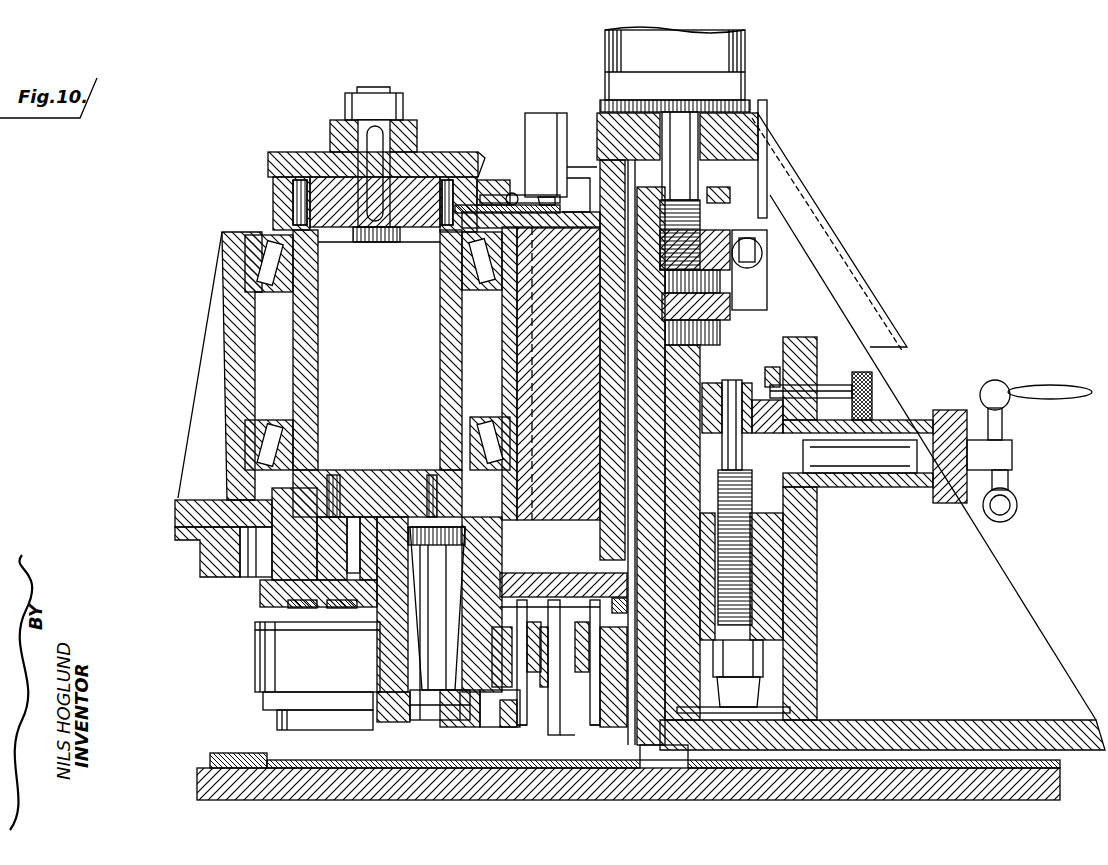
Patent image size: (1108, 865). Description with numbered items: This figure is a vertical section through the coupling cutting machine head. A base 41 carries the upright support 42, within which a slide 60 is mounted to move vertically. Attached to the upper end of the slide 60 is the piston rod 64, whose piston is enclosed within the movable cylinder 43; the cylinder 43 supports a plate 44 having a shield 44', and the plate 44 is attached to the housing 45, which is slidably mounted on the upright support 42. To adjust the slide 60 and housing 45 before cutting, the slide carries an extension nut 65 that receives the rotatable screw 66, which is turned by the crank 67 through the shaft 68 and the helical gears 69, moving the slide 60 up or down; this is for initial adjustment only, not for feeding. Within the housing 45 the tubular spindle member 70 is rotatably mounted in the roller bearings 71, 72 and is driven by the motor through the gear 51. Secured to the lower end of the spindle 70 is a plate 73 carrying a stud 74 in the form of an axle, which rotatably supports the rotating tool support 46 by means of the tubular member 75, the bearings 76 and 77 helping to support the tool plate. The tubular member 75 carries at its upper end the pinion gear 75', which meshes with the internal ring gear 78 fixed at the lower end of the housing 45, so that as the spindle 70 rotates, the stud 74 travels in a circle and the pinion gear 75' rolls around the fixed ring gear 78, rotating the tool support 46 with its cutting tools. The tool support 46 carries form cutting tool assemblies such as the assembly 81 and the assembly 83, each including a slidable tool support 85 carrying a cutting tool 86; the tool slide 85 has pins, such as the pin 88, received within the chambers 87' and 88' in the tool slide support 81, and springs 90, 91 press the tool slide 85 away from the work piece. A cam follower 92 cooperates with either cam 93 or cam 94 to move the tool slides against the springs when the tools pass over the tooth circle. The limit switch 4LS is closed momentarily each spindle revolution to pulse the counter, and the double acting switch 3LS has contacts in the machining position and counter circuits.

The base 41 is at (197, 782).
The upright support 42 is at (662, 740).
The movable cylinder 43 is at (755, 37).
The plate 44 is at (706, 153).
The shield 44' is at (829, 232).
The limit switch 4LS is at (542, 112).
The double acting switch 3LS is at (762, 272).
The piston rod 64 is at (695, 183).
The gear 51 is at (270, 163).
The roller bearing 71 is at (262, 240).
The roller bearing 72 is at (262, 450).
The housing 45 is at (222, 342).
The tubular spindle member 70 is at (320, 340).
The plate 73 is at (285, 508).
The pinion gear 75' is at (308, 562).
The internal ring gear 78 is at (205, 565).
The rotating tool support 46 is at (253, 660).
The cam 94 is at (305, 610).
The cam 93 is at (340, 610).
The tubular member 75 is at (375, 604).
The bearing 77 is at (412, 531).
The form cutting tool assembly 83 is at (276, 722).
The bearing 76 is at (403, 716).
The stud 74 is at (450, 725).
The chamber 88' is at (509, 736).
The cutting tool 86 is at (560, 735).
The slidable tool support 85 is at (582, 737).
The chamber 87' is at (617, 736).
The form cutting tool assembly 81 is at (618, 720).
The pin 88 is at (513, 662).
The spring 91 is at (510, 650).
The cam follower 92 is at (575, 596).
The spring 90 is at (618, 606).
The slide 60 is at (690, 378).
The shaft 68 is at (897, 438).
The crank 67 is at (1005, 420).
The helical gears 69 is at (745, 478).
The extension nut 65 is at (775, 592).
The rotatable screw 66 is at (730, 605).